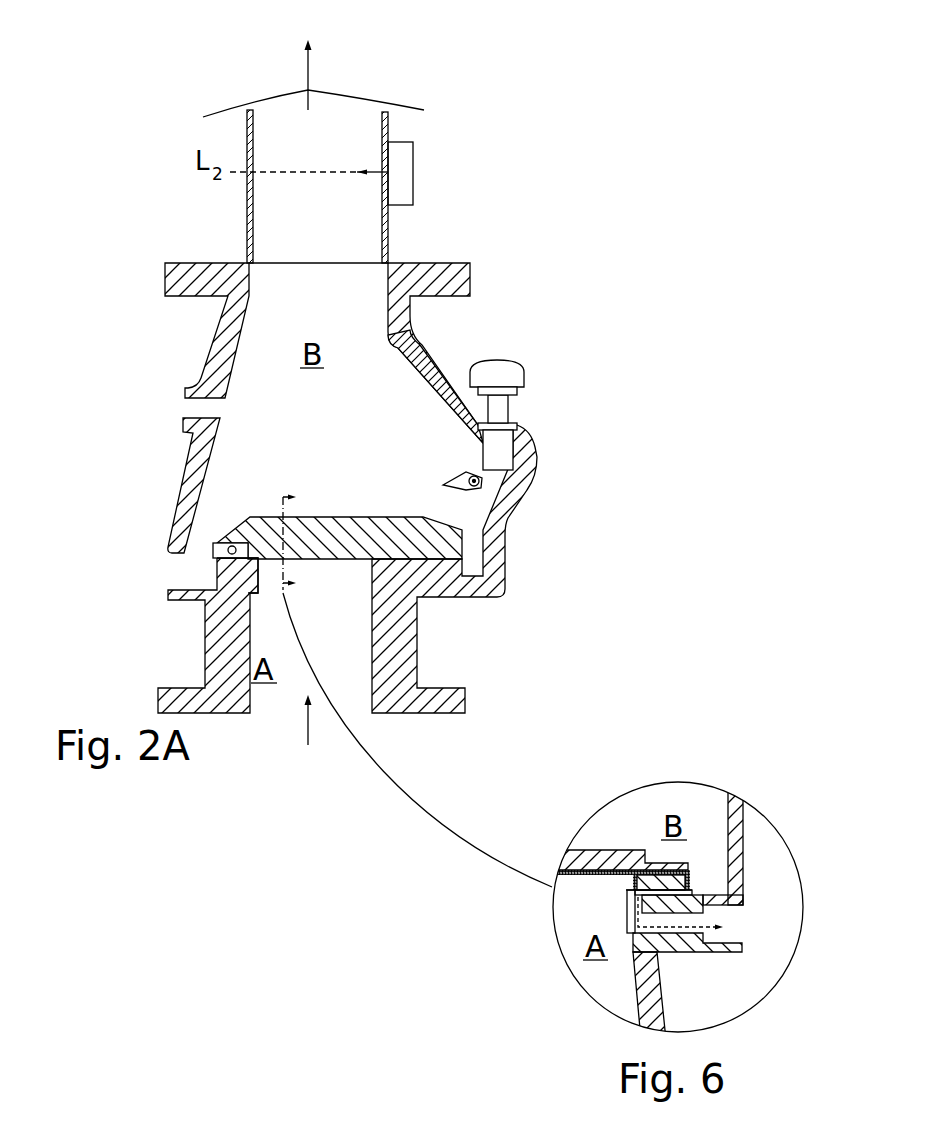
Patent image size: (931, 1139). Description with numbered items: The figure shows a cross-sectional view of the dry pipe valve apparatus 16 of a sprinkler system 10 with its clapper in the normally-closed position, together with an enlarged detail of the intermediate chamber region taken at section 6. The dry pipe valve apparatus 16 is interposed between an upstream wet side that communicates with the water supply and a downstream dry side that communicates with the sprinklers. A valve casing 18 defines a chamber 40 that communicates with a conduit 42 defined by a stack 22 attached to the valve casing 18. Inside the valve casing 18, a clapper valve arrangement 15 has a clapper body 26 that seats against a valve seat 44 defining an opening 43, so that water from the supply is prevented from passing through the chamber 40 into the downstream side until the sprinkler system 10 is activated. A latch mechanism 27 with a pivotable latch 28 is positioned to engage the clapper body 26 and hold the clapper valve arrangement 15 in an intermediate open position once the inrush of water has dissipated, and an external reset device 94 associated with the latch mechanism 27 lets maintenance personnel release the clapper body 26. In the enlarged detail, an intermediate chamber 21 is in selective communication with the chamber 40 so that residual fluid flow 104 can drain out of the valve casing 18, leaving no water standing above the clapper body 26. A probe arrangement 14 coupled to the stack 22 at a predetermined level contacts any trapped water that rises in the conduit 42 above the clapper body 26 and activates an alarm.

In FIG. 2A, the sprinkler system 10 is at (553, 140).
In FIG. 2A, the probe arrangement 14 is at (413, 177).
In FIG. 2A, the clapper valve arrangement 15 is at (252, 510).
In FIG. 2A, the dry pipe valve apparatus 16 is at (87, 263).
In FIG. 2A, the valve casing 18 is at (443, 372).
In FIG. 6, the valve casing 18 is at (743, 837).
In FIG. 6, the intermediate chamber 21 is at (657, 950).
In FIG. 2A, the stack 22 is at (387, 253).
In FIG. 2A, the clapper body 26 is at (423, 517).
In FIG. 6, the clapper body 26 is at (590, 850).
In FIG. 2A, the latch mechanism 27 is at (487, 488).
In FIG. 2A, the pivotable latch 28 is at (481, 466).
In FIG. 2A, the chamber 40 is at (334, 446).
In FIG. 6, the chamber 40 is at (645, 835).
In FIG. 2A, the conduit 42 is at (313, 138).
In FIG. 2A, the opening 43 is at (350, 690).
In FIG. 2A, the valve seat 44 is at (268, 578).
In FIG. 2A, the external reset device 94 is at (513, 362).
In FIG. 6, the residual fluid flow 104 is at (725, 928).
In FIG. 2A, the section line 6 is at (417, 686).